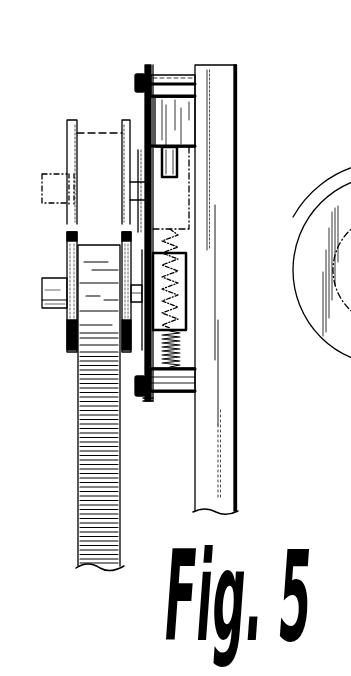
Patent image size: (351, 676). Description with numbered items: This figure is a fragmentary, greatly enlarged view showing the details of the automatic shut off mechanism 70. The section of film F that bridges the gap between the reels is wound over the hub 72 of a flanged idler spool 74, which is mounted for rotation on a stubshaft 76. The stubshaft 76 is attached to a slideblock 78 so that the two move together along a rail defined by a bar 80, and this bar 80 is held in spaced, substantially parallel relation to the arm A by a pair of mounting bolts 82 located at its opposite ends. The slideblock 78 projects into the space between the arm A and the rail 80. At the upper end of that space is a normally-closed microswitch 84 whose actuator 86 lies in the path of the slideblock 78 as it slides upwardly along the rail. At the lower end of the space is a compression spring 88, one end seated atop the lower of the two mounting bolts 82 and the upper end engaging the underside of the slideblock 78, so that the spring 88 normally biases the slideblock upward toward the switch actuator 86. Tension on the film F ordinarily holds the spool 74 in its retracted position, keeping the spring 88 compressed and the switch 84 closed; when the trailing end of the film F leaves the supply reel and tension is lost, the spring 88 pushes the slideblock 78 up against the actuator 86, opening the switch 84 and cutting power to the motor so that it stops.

The belt tensioning assembly 70 is at (85, 78).
The hub 72 is at (90, 147).
The flanged idler spool 74 is at (70, 270).
The stubshaft 76 is at (62, 183).
The slideblock 78 is at (185, 287).
The bar 80 is at (158, 80).
The mounting bolts 82 is at (173, 80).
The microswitch 84 is at (180, 118).
The actuator 86 is at (172, 163).
The compression spring 88 is at (177, 342).
The arm A is at (236, 208).
The film F is at (90, 445).